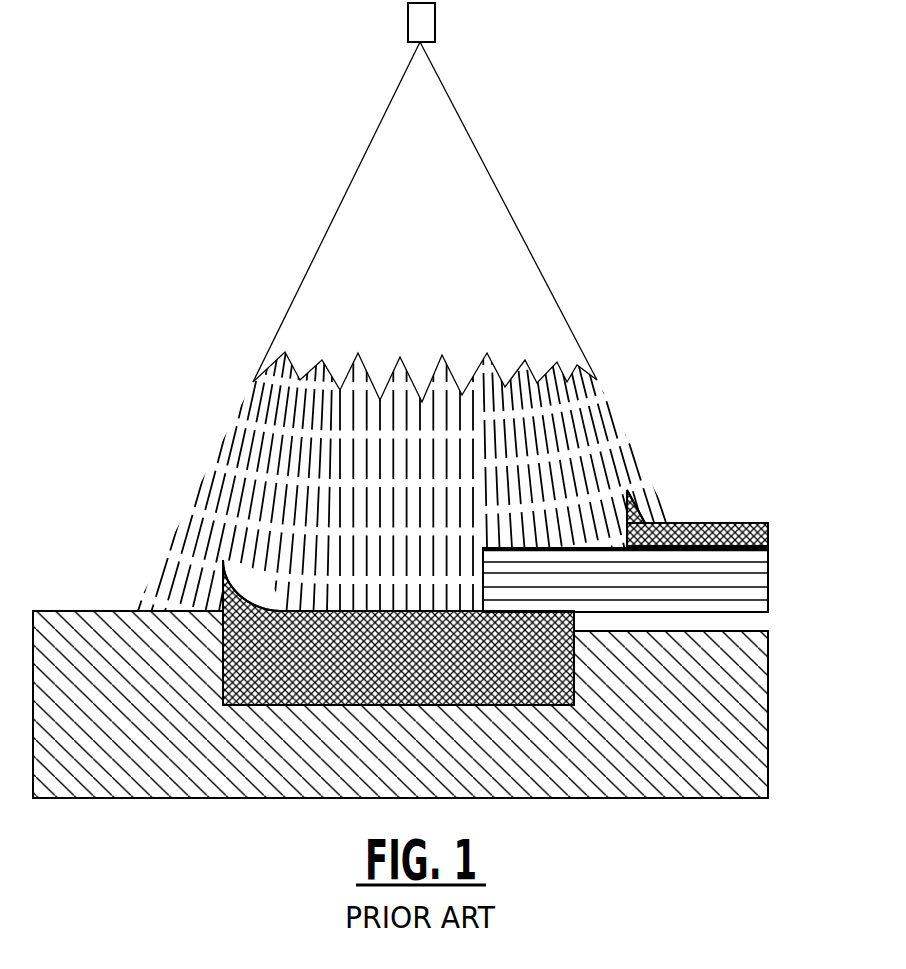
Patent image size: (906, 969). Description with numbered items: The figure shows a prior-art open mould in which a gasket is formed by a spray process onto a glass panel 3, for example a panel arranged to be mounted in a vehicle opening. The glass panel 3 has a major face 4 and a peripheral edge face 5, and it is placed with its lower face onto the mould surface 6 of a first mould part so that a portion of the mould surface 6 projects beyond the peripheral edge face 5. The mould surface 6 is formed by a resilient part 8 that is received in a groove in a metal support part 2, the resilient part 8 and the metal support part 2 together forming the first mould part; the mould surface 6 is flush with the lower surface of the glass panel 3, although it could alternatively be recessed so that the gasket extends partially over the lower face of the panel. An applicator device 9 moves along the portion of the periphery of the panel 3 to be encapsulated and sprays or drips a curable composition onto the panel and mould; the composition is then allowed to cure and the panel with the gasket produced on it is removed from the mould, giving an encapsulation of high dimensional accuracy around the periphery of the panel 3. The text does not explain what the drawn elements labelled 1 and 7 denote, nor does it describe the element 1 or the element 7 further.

The embedded coating layer 1 is at (543, 683).
The metal support part 2 is at (610, 775).
The glass panel 3 is at (753, 572).
The major face 4 is at (555, 543).
The peripheral edge face 5 is at (480, 548).
The mould surface 6 is at (301, 610).
The mask layer 7 is at (700, 527).
The resilient part 8 is at (223, 556).
The applicator device 9 is at (420, 22).